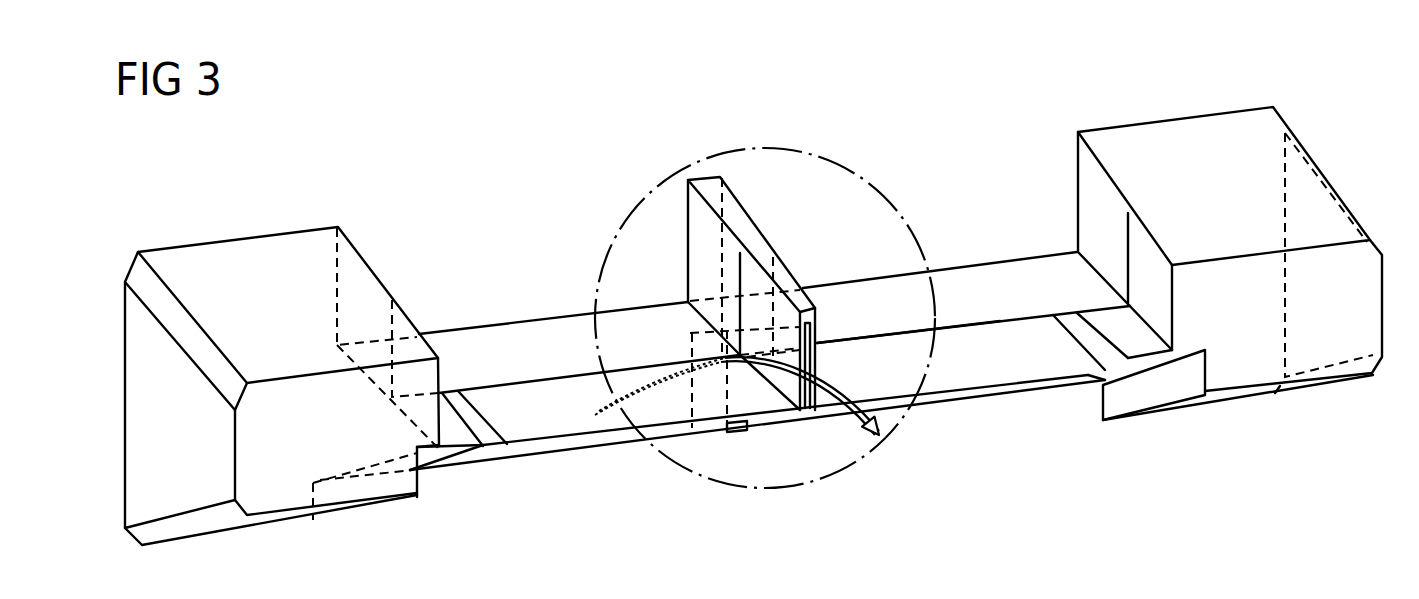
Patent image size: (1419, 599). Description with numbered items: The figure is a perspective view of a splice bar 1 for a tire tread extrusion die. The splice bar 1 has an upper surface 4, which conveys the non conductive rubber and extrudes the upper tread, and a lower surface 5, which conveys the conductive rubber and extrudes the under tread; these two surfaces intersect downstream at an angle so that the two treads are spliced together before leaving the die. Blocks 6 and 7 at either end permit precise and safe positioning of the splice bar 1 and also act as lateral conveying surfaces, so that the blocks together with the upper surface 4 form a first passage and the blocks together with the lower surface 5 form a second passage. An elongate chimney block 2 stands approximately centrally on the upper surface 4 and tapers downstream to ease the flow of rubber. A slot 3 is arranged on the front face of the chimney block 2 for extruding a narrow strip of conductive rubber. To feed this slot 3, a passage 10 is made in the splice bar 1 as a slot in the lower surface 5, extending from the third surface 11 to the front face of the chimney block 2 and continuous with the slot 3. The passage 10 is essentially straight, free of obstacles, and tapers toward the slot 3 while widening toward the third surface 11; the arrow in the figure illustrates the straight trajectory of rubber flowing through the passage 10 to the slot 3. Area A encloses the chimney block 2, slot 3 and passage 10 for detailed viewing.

The splice bar 1 is at (490, 170).
The chimney block 2 is at (700, 174).
The slot 3 is at (822, 368).
The upper surface 4 is at (960, 362).
The lower surface 5 is at (611, 444).
The block 6 is at (247, 252).
The block 7 is at (1175, 137).
The passage 10 is at (742, 390).
The third surface 11 is at (867, 308).
The area A is at (845, 165).